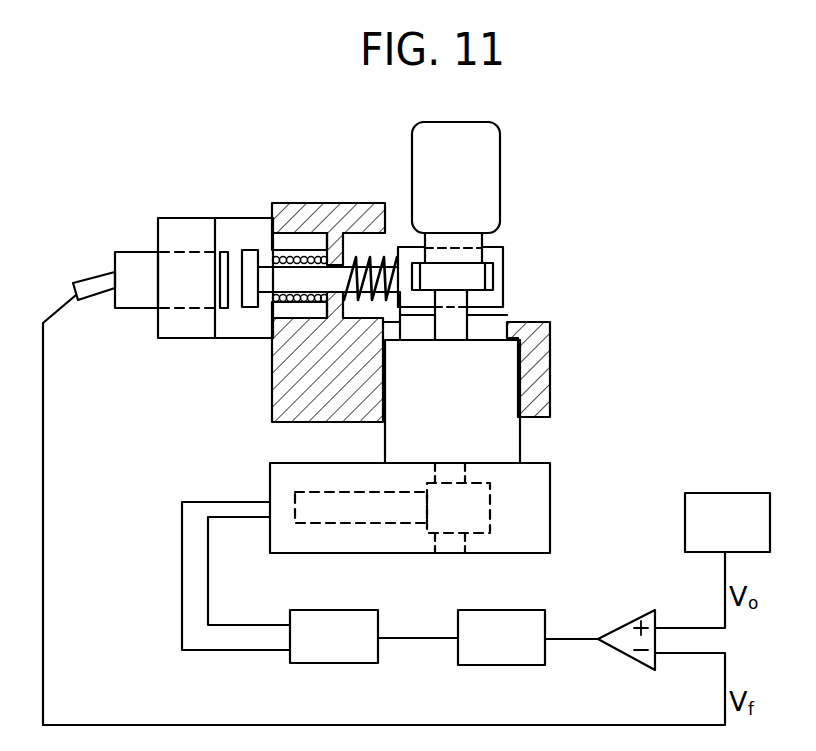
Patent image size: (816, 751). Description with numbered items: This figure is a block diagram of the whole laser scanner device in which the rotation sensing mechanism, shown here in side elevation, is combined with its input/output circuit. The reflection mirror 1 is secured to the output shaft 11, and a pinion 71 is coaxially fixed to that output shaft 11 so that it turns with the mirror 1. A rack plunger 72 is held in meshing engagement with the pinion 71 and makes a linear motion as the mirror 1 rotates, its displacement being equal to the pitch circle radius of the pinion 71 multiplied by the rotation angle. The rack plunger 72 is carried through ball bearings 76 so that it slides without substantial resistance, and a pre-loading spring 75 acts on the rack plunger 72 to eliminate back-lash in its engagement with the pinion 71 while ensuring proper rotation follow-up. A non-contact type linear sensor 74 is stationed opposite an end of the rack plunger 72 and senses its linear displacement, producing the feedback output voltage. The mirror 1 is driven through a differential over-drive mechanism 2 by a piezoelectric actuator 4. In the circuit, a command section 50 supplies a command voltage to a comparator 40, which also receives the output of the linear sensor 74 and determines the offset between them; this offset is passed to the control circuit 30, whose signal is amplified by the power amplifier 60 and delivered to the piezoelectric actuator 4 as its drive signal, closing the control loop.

The reflection mirror 1 is at (496, 168).
The pinion 71 is at (489, 273).
The rack plunger 72 is at (497, 300).
The output shaft 11 is at (460, 319).
The differential over-drive mechanism 2 is at (510, 395).
The piezoelectric actuator 4 is at (296, 494).
The non-contact type linear sensor 74 is at (127, 250).
The pre-loading spring 75 is at (362, 262).
The ball bearings 76 is at (273, 248).
The power amplifier 60 is at (325, 663).
The control circuit 30 is at (488, 665).
The comparator 40 is at (636, 620).
The command section 50 is at (735, 493).